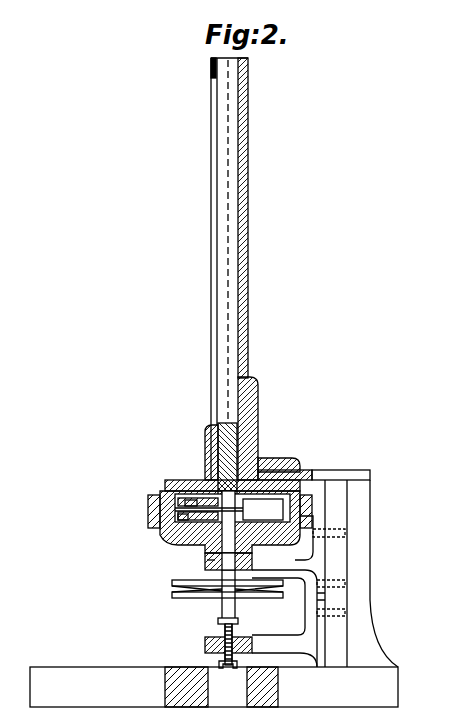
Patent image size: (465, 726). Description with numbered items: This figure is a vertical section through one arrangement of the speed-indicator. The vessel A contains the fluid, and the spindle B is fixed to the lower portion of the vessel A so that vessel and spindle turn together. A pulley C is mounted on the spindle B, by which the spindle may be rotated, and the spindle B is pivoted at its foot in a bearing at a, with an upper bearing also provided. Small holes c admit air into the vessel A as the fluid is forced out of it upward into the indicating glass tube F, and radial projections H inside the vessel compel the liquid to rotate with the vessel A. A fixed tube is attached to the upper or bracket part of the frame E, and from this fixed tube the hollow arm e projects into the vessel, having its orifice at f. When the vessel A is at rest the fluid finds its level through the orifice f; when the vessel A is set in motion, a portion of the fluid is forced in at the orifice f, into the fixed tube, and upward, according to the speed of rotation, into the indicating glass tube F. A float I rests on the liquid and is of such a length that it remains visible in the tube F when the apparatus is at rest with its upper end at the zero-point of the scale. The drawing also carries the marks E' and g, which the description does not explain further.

The indicating glass tube F is at (230, 269).
The float I is at (227, 461).
The small holes c is at (203, 479).
The frame E is at (328, 560).
The standard bracket E' is at (321, 544).
The vessel A is at (230, 513).
The radial projections H is at (229, 509).
The hollow arm e is at (193, 530).
The orifice f is at (174, 537).
The spindle B is at (228, 585).
The pin g is at (211, 570).
The pulley C is at (262, 592).
The bearing a is at (258, 641).